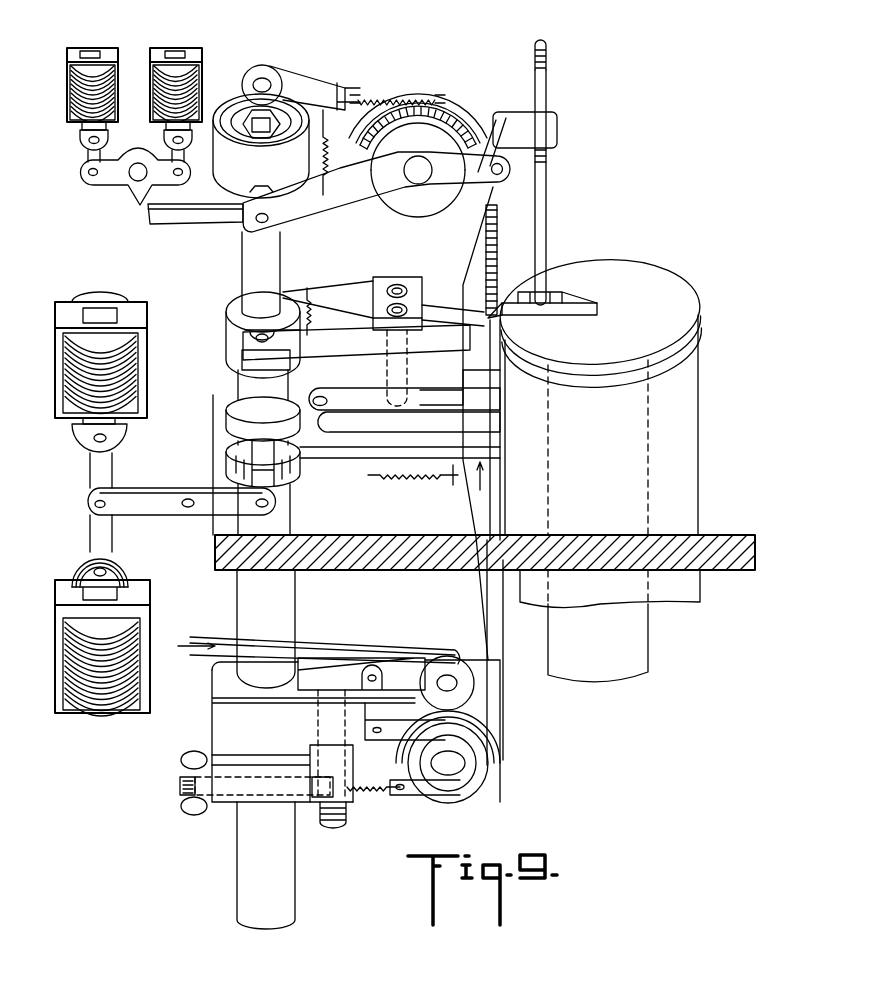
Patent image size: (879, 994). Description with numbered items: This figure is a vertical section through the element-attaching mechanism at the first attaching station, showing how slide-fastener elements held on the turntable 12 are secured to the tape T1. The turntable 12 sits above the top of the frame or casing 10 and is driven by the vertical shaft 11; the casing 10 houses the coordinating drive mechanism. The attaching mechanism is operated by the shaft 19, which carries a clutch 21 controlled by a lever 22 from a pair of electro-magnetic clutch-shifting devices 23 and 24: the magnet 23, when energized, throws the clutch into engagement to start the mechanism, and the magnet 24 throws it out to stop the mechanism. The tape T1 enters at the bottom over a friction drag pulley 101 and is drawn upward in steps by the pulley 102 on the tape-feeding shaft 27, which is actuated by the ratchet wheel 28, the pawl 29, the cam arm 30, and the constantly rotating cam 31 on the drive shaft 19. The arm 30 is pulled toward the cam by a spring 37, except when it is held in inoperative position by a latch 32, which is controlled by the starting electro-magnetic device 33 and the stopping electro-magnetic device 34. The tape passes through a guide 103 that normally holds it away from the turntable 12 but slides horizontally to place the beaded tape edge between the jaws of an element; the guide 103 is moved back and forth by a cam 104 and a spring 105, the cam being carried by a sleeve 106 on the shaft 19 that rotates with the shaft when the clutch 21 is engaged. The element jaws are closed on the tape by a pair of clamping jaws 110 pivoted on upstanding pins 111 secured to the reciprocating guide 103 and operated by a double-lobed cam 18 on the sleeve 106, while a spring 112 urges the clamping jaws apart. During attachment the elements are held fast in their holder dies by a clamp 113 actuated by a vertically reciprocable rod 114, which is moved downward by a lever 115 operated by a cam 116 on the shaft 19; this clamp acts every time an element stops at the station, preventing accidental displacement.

The frame or casing 10 is at (705, 570).
The vertical shaft 11 is at (640, 620).
The turntable 12 is at (628, 350).
The double-lobed cam 18 is at (228, 328).
The shaft 19 is at (245, 256).
The clutch 21 is at (236, 462).
The lever 22 is at (150, 517).
The electro-magnetic clutch-shifting device 23 is at (143, 640).
The electro-magnetic clutch-shifting device 24 is at (132, 376).
The tape-feeding shaft 27 is at (415, 175).
The ratchet wheel 28 is at (437, 117).
The pawl 29 is at (490, 115).
The lever 30 is at (305, 212).
The cam 31 is at (226, 184).
The latch 32 is at (133, 202).
The electro-magnetic device 33 is at (92, 50).
The electro-magnetic device 34 is at (172, 48).
The spring 37 is at (327, 148).
The friction drag pulley 101 is at (490, 722).
The pulley 102 is at (402, 79).
The guide 103 is at (440, 410).
The cam 104 is at (230, 422).
The spring 105 is at (420, 485).
The sleeve 106 is at (252, 396).
The clamping jaws 110 is at (438, 315).
The upstanding pins 111 is at (402, 307).
The spring 112 is at (312, 302).
The clamp 113 is at (490, 300).
The vertically reciprocable rod 114 is at (548, 194).
The lever 115 is at (290, 80).
The cam 116 is at (215, 116).
The tape T1 is at (365, 85).